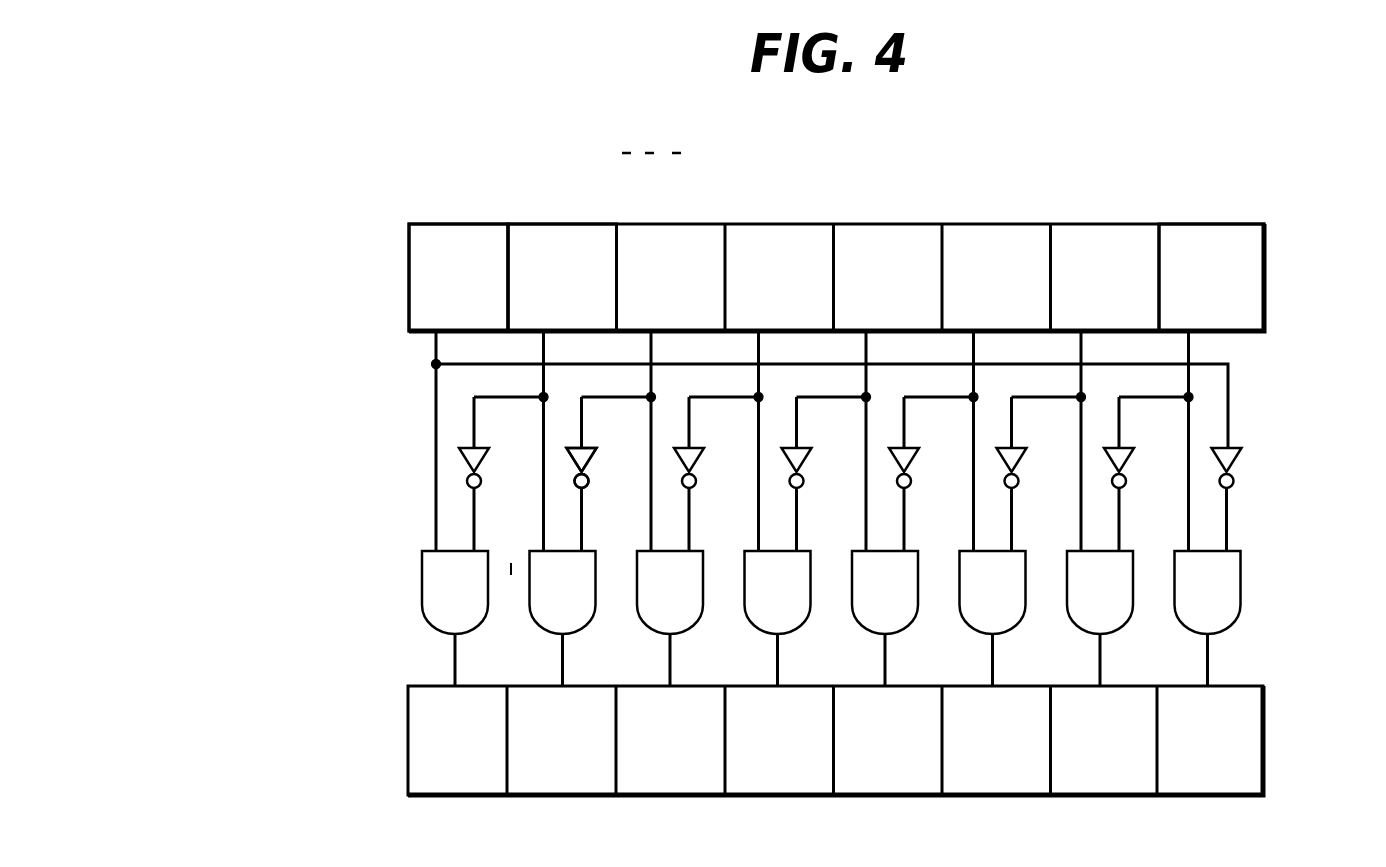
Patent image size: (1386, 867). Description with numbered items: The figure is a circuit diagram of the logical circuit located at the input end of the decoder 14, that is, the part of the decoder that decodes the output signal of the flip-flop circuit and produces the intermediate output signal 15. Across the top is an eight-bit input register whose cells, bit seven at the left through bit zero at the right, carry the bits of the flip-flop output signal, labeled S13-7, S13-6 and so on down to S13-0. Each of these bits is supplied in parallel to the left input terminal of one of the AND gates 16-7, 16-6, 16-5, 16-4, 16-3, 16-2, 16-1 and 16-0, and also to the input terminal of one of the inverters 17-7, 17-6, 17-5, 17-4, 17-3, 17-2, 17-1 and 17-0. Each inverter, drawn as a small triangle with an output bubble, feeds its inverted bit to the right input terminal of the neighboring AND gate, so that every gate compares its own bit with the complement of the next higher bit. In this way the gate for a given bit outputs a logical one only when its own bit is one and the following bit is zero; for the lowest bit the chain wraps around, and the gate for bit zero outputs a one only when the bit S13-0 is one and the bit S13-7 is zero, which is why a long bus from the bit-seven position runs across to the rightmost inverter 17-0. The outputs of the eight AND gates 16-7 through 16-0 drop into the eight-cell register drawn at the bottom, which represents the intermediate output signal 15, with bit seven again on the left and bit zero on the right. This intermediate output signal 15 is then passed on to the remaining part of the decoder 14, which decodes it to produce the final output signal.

The decoder 14 is at (744, 258).
The intermediate output signal 15 is at (732, 767).
The AND gate 16-7 is at (441, 610).
The AND gate 16-6 is at (548, 610).
The AND gate 16-5 is at (656, 610).
The AND gate 16-4 is at (764, 610).
The AND gate 16-3 is at (871, 610).
The AND gate 16-2 is at (978, 610).
The AND gate 16-1 is at (1086, 610).
The AND gate 16-0 is at (1194, 610).
The inverter 17-7 is at (457, 465).
The inverter 17-6 is at (570, 458).
The inverter 17-5 is at (586, 458).
The inverter 17-4 is at (693, 458).
The inverter 17-3 is at (800, 458).
The inverter 17-2 is at (908, 458).
The inverter 17-1 is at (1149, 500).
The inverter 17-0 is at (1241, 453).
The input signal bit 7 S13-7 is at (409, 233).
The input signal bit 6 S13-6 is at (565, 223).
The input signal bit 0 S13-0 is at (1267, 242).